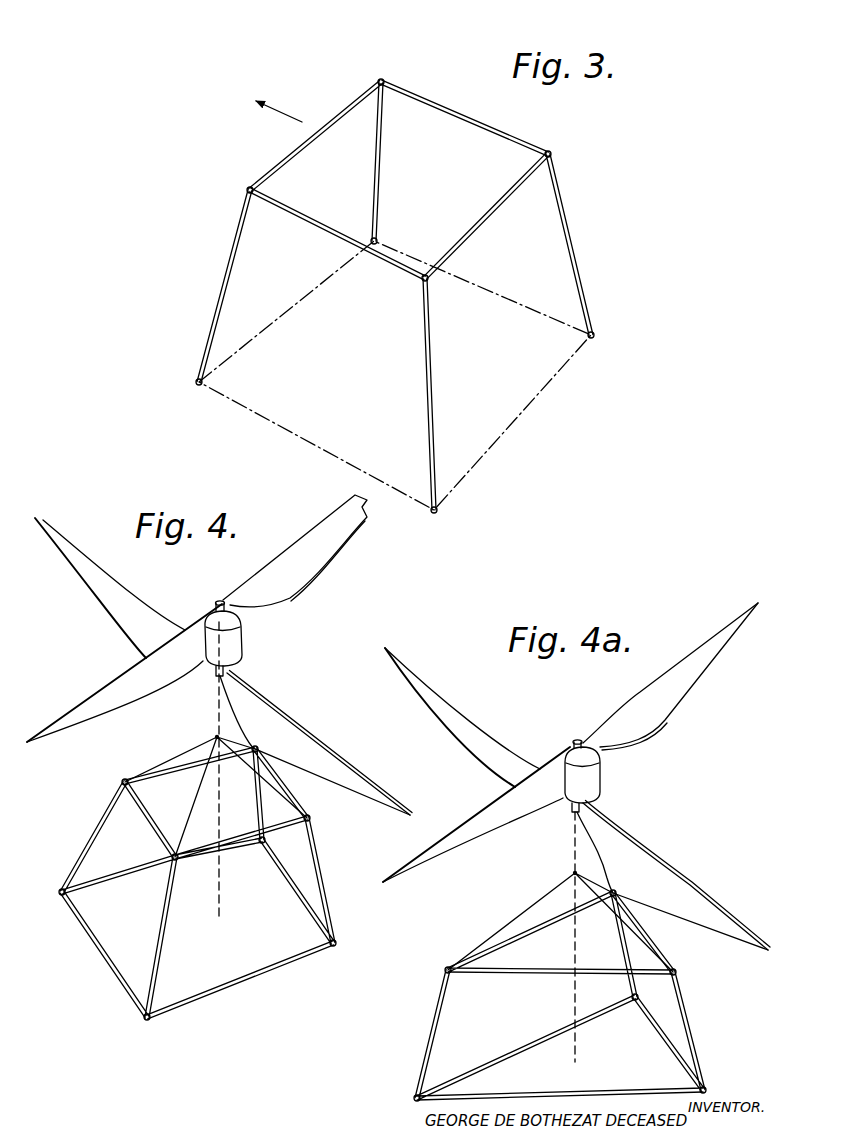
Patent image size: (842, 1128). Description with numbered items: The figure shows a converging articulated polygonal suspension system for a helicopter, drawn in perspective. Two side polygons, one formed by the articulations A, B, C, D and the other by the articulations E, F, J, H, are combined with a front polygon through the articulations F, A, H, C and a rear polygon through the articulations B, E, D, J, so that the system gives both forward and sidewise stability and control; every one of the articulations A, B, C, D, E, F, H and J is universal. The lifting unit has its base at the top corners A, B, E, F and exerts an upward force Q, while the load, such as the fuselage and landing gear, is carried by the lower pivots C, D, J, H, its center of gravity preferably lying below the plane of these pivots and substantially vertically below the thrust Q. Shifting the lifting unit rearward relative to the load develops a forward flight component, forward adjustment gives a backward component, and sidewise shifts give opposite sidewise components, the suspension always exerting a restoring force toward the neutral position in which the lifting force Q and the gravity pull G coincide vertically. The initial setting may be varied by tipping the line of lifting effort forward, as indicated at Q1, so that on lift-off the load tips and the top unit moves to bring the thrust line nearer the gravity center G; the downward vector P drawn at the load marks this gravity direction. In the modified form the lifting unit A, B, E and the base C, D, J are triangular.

In FIG. 3, the articulation A is at (247, 190).
In FIG. 4, the articulation A is at (123, 781).
In FIG. 4A, the articulation A is at (446, 968).
In FIG. 3, the articulation B is at (428, 282).
In FIG. 4, the articulation B is at (172, 857).
In FIG. 4A, the articulation B is at (616, 891).
In FIG. 3, the pivot C is at (196, 383).
In FIG. 4, the pivot C is at (59, 894).
In FIG. 4A, the pivot C is at (403, 1120).
In FIG. 3, the pivot D is at (437, 512).
In FIG. 4, the pivot D is at (146, 1020).
In FIG. 4A, the pivot D is at (638, 997).
In FIG. 3, the articulation E is at (552, 153).
In FIG. 4, the articulation E is at (310, 818).
In FIG. 4A, the articulation E is at (676, 972).
In FIG. 3, the articulation F is at (381, 79).
In FIG. 4, the articulation F is at (225, 727).
In FIG. 3, the pivot H is at (372, 238).
In FIG. 4, the pivot H is at (260, 843).
In FIG. 3, the pivot J is at (594, 337).
In FIG. 4, the pivot J is at (334, 946).
In FIG. 4A, the pivot J is at (706, 1088).
In FIG. 3, the upward force Q is at (401, 173).
In FIG. 4, the upward force Q is at (214, 704).
In FIG. 3, the inclined lift line Q1 is at (399, 172).
In FIG. 3, the tilt angle o is at (389, 140).
In FIG. 3, the gravity pull G is at (398, 420).
In FIG. 3, the force P is at (395, 402).